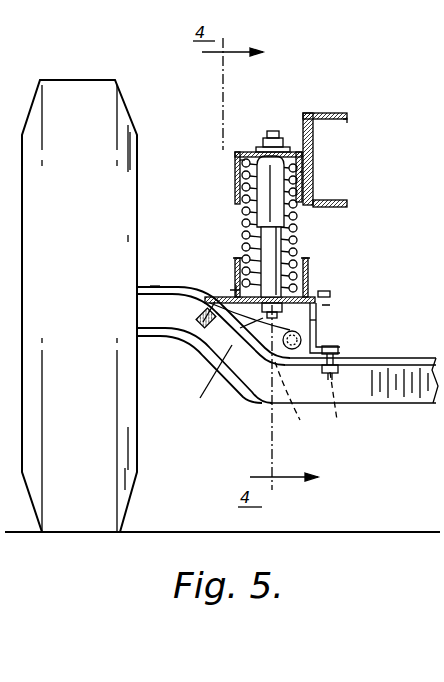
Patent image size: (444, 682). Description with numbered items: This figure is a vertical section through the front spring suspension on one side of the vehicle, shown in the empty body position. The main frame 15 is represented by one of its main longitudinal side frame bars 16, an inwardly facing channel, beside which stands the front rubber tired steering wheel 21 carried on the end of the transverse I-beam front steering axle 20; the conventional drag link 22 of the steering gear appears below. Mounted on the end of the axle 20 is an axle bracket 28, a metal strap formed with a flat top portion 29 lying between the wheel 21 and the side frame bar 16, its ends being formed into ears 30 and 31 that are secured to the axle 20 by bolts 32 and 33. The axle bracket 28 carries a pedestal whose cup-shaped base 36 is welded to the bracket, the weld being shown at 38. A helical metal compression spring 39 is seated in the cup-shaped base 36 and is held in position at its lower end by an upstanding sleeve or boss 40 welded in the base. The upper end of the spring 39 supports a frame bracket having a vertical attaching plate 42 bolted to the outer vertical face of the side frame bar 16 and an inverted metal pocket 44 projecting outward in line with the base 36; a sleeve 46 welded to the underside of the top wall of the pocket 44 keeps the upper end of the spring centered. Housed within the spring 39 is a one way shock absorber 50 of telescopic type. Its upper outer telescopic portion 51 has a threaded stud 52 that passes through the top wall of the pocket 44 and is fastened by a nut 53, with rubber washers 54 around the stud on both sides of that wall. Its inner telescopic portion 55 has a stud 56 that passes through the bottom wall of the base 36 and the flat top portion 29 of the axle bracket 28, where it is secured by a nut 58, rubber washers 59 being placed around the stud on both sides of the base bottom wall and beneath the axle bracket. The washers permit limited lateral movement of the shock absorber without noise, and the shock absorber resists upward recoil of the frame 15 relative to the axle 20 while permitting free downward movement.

The main frame 15 is at (343, 98).
The main longitudinal side frame bar 16 is at (348, 120).
The front steering axle 20 is at (410, 403).
The front rubber tired steering wheel 21 is at (95, 80).
The drag link 22 is at (306, 406).
The axle bracket 28 is at (320, 350).
The flat top portion 29 is at (190, 286).
The ear 30 is at (200, 352).
The ear 31 is at (333, 373).
The bolt 32 is at (205, 322).
The bolt 33 is at (334, 404).
The cup-shaped base 36 is at (236, 286).
The weld 38 is at (236, 290).
The helical metal compression spring 39 is at (300, 223).
The upstanding sleeve or boss 40 is at (310, 272).
The vertical attaching plate 42 is at (304, 113).
The inverted metal pocket 44 is at (235, 155).
The sleeve 46 is at (235, 162).
The one way shock absorber 50 is at (277, 192).
The upper outer telescopic portion 51 is at (285, 190).
The threaded stud 52 is at (279, 131).
The nut 53 is at (270, 138).
The rubber washers 54 is at (262, 148).
The inner telescopic portion 55 is at (282, 250).
The stud 56 is at (262, 332).
The nut 58 is at (320, 333).
The rubber washers 59 is at (206, 388).